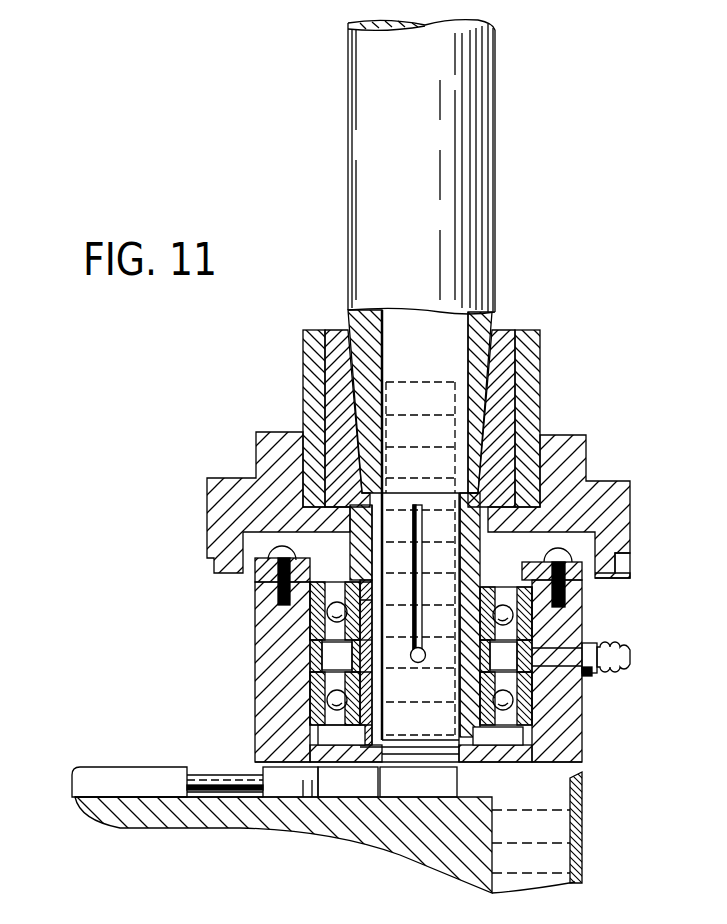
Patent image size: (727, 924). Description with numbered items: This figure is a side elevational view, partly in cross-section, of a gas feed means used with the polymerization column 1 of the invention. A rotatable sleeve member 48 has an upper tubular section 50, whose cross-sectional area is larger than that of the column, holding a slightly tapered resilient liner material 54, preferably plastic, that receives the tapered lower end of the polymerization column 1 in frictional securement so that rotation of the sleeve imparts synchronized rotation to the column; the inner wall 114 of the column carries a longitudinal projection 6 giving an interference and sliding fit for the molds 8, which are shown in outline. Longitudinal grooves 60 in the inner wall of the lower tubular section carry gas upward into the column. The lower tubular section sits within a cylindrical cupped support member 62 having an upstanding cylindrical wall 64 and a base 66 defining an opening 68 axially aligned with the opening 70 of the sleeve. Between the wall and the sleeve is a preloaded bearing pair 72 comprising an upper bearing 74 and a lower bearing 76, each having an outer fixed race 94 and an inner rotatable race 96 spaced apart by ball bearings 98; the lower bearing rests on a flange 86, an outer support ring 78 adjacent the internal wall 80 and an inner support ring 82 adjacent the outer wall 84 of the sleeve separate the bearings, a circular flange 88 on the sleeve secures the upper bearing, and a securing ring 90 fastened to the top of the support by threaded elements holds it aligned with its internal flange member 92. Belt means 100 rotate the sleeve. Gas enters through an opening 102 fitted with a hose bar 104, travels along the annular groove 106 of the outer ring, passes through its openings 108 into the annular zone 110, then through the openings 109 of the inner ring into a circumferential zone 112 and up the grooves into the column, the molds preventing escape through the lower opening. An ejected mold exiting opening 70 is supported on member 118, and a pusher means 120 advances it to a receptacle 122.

The polymerization column 1 is at (492, 262).
The longitudinal projection 6 is at (378, 345).
The mold 8 is at (447, 782).
The rotatable sleeve member 48 is at (540, 403).
The upper tubular section 50 is at (303, 395).
The resilient liner material 54 is at (500, 335).
The longitudinal grooves 60 is at (457, 553).
The cylindrical cupped support member 62 is at (256, 600).
The upstanding cylindrical wall 64 is at (582, 750).
The base 66 is at (322, 770).
The opening 68 is at (440, 752).
The opening 70 is at (410, 745).
The cylindrical preloaded bearing pair 72 is at (307, 615).
The upper bearing 74 is at (322, 630).
The lower bearing 76 is at (322, 717).
The outer support ring 78 is at (553, 628).
The internal wall 80 is at (525, 687).
The inner support ring 82 is at (373, 645).
The outer wall 84 is at (366, 607).
The flange 86 is at (517, 755).
The circular flange 88 is at (490, 590).
The securing ring 90 is at (582, 563).
The internal flange member 92 is at (315, 583).
The outer fixed race 94 is at (525, 612).
The inner rotatable race 96 is at (368, 580).
The ball bearings 98 is at (552, 570).
The belt means 100 is at (610, 490).
The opening 102 is at (570, 651).
The hose bar 104 is at (628, 657).
The annular groove 106 is at (313, 660).
The openings 108 is at (313, 670).
The openings 109 is at (487, 676).
The annular zone 110 is at (493, 650).
The circumferential zone 112 is at (375, 648).
The inner wall 114 is at (468, 366).
The member 118 is at (358, 826).
The pusher means 120 is at (88, 770).
The receptacle 122 is at (565, 805).